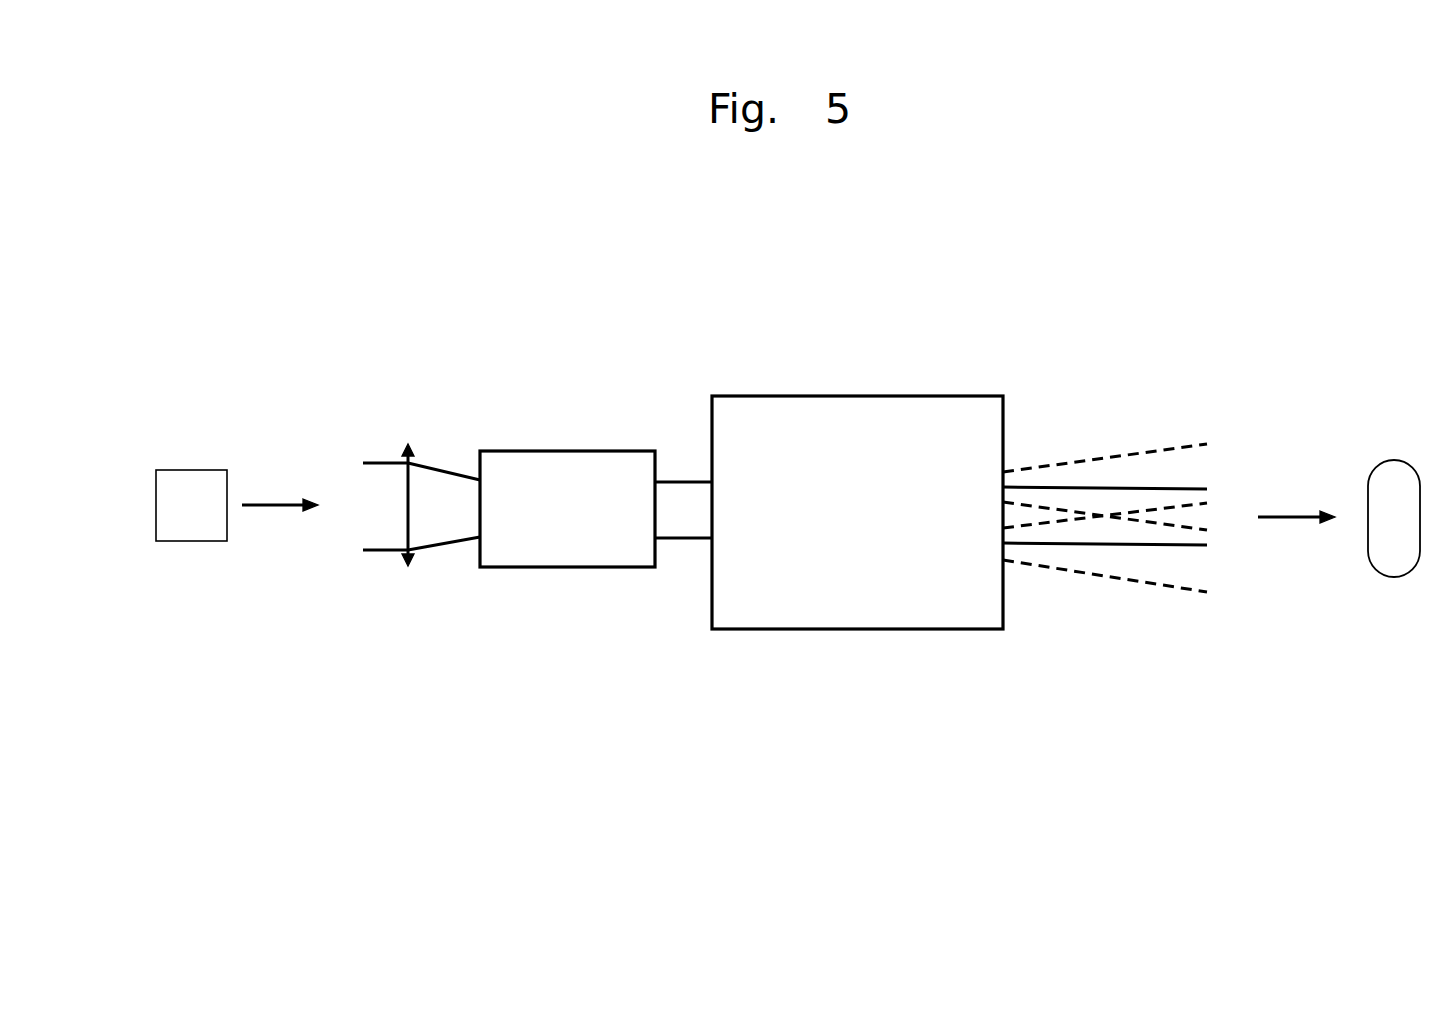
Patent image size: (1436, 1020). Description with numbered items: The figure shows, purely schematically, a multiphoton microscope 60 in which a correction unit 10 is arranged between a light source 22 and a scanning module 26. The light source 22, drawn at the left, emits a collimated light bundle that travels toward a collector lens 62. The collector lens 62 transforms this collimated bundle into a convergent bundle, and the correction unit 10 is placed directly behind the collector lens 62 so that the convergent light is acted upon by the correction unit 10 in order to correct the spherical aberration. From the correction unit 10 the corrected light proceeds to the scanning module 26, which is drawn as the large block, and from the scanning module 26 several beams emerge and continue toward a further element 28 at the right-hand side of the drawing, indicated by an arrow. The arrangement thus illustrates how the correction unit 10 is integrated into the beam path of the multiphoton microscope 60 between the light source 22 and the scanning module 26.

The multiphoton microscope 60 is at (477, 248).
The light source 22 is at (211, 469).
The collector lens 62 is at (410, 562).
The correction unit 10 is at (557, 450).
The scanning module 26 is at (902, 395).
The target / detector 28 is at (1383, 458).